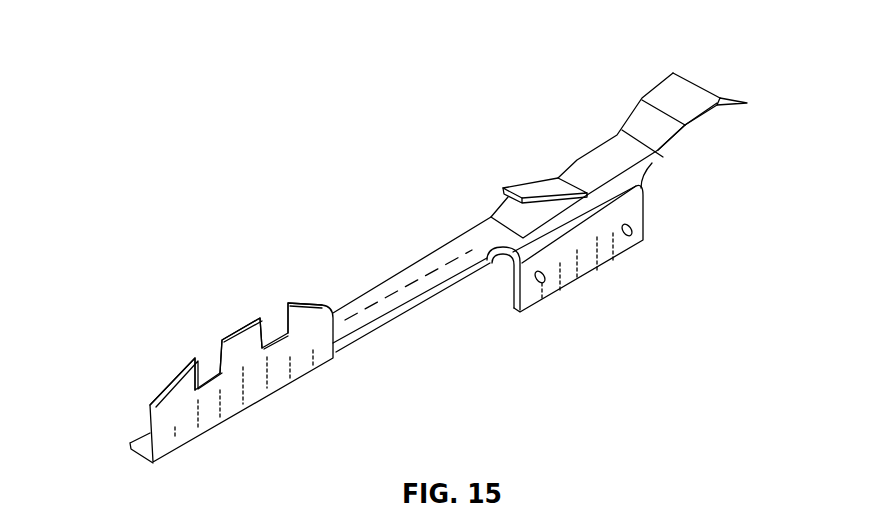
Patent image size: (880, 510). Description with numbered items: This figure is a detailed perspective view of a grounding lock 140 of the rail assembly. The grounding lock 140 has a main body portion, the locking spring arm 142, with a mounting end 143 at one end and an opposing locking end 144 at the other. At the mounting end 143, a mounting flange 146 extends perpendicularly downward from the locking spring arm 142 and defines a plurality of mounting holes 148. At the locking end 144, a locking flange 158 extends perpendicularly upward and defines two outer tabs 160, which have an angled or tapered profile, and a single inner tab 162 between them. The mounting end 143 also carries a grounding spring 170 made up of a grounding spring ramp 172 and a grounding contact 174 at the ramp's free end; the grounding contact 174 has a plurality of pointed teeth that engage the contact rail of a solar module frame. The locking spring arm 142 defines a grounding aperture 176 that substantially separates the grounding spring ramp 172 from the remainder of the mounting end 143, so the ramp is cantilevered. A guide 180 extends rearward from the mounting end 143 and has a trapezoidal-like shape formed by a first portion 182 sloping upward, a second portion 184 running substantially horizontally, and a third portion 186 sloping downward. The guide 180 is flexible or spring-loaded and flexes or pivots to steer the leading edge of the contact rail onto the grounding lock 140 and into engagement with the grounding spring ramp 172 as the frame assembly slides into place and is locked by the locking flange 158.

The grounding lock 140 is at (131, 206).
The locking spring arm 142 is at (360, 303).
The mounting end 143 is at (697, 175).
The locking end 144 is at (109, 414).
The mounting flange 146 is at (585, 268).
The mounting holes 148 is at (541, 286).
The locking flange 158 is at (208, 283).
The outer tabs 160 is at (175, 381).
The inner tab 162 is at (242, 324).
The grounding spring 170 is at (534, 165).
The grounding spring ramp 172 is at (572, 172).
The grounding contact 174 is at (503, 189).
The grounding aperture 176 is at (495, 250).
The guide 180 is at (668, 84).
The portion 182 is at (640, 114).
The portion 184 is at (687, 95).
The portion 186 is at (720, 90).